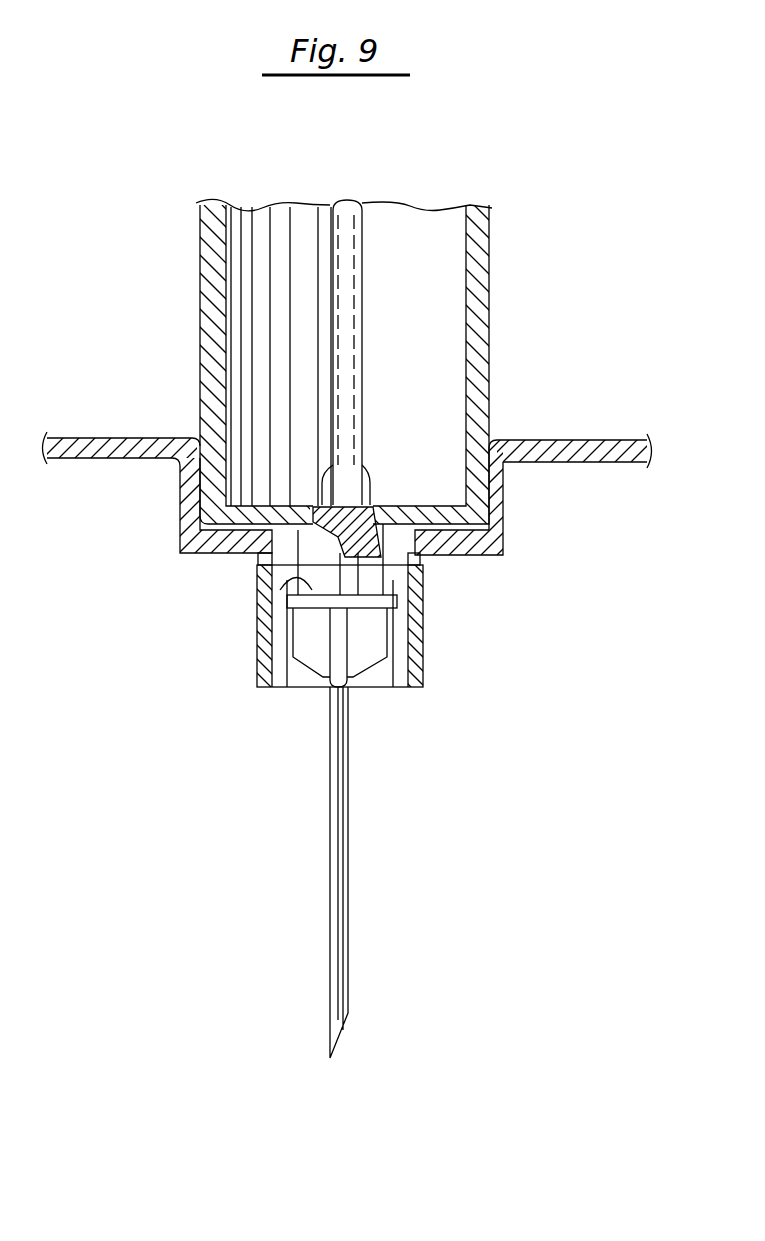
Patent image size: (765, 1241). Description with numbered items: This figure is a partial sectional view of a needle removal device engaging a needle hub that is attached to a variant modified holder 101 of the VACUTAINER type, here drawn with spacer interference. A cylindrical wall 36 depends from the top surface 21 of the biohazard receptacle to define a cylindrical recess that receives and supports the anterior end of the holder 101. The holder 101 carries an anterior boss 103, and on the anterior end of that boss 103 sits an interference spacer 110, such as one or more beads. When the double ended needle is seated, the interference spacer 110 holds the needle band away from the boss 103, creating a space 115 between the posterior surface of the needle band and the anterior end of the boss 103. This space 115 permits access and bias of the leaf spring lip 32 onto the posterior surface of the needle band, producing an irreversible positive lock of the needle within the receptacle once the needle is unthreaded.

The variant modified holder 101 is at (500, 310).
The top surface 21 is at (107, 438).
The cylindrical wall 36 is at (182, 498).
The boss 103 is at (292, 575).
The leaf spring lip 32 is at (290, 612).
The space 115 is at (300, 620).
The interference spacer 110 is at (330, 640).